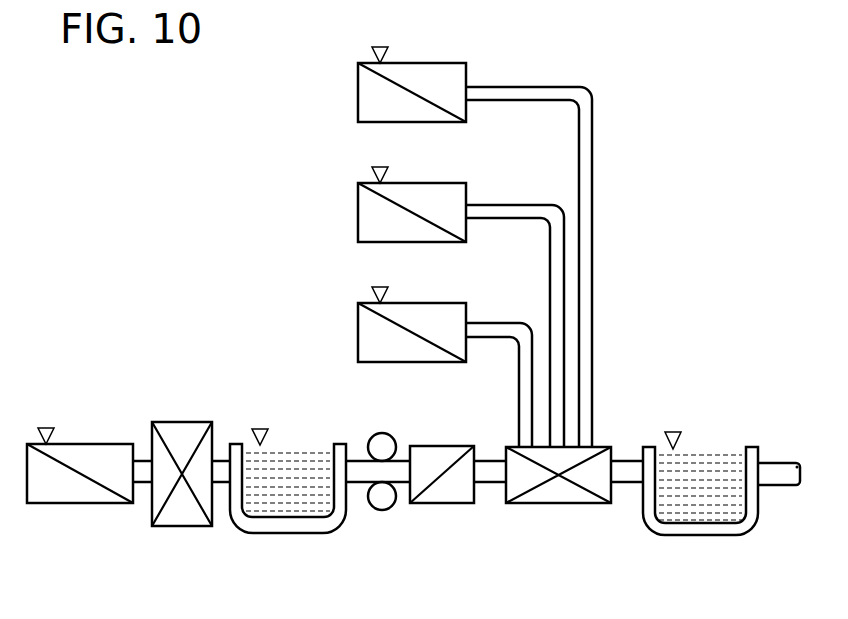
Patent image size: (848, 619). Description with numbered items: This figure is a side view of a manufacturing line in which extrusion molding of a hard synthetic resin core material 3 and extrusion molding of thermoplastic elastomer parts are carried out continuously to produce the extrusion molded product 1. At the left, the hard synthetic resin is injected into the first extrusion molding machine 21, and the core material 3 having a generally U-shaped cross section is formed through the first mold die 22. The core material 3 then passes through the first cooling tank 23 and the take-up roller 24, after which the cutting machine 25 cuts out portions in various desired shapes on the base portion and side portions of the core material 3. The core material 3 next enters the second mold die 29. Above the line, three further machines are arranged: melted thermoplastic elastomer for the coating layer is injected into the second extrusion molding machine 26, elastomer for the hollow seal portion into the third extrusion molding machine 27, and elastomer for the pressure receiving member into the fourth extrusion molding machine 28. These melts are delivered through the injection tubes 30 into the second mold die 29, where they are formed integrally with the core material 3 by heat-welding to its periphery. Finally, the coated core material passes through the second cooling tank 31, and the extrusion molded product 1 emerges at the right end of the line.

The extrusion molded product 1 is at (781, 488).
The core material 3 is at (216, 458).
The first extrusion molding machine 21 is at (80, 443).
The first mold die 22 is at (185, 530).
The first cooling tank 23 is at (286, 444).
The take-up roller 24 is at (383, 433).
The cutting machine 25 is at (442, 505).
The second extrusion molding machine 26 is at (421, 303).
The third extrusion molding machine 27 is at (421, 183).
The fourth extrusion molding machine 28 is at (421, 63).
The second mold die 29 is at (562, 505).
The injection tubes 30 is at (527, 357).
The second cooling tank 31 is at (712, 447).